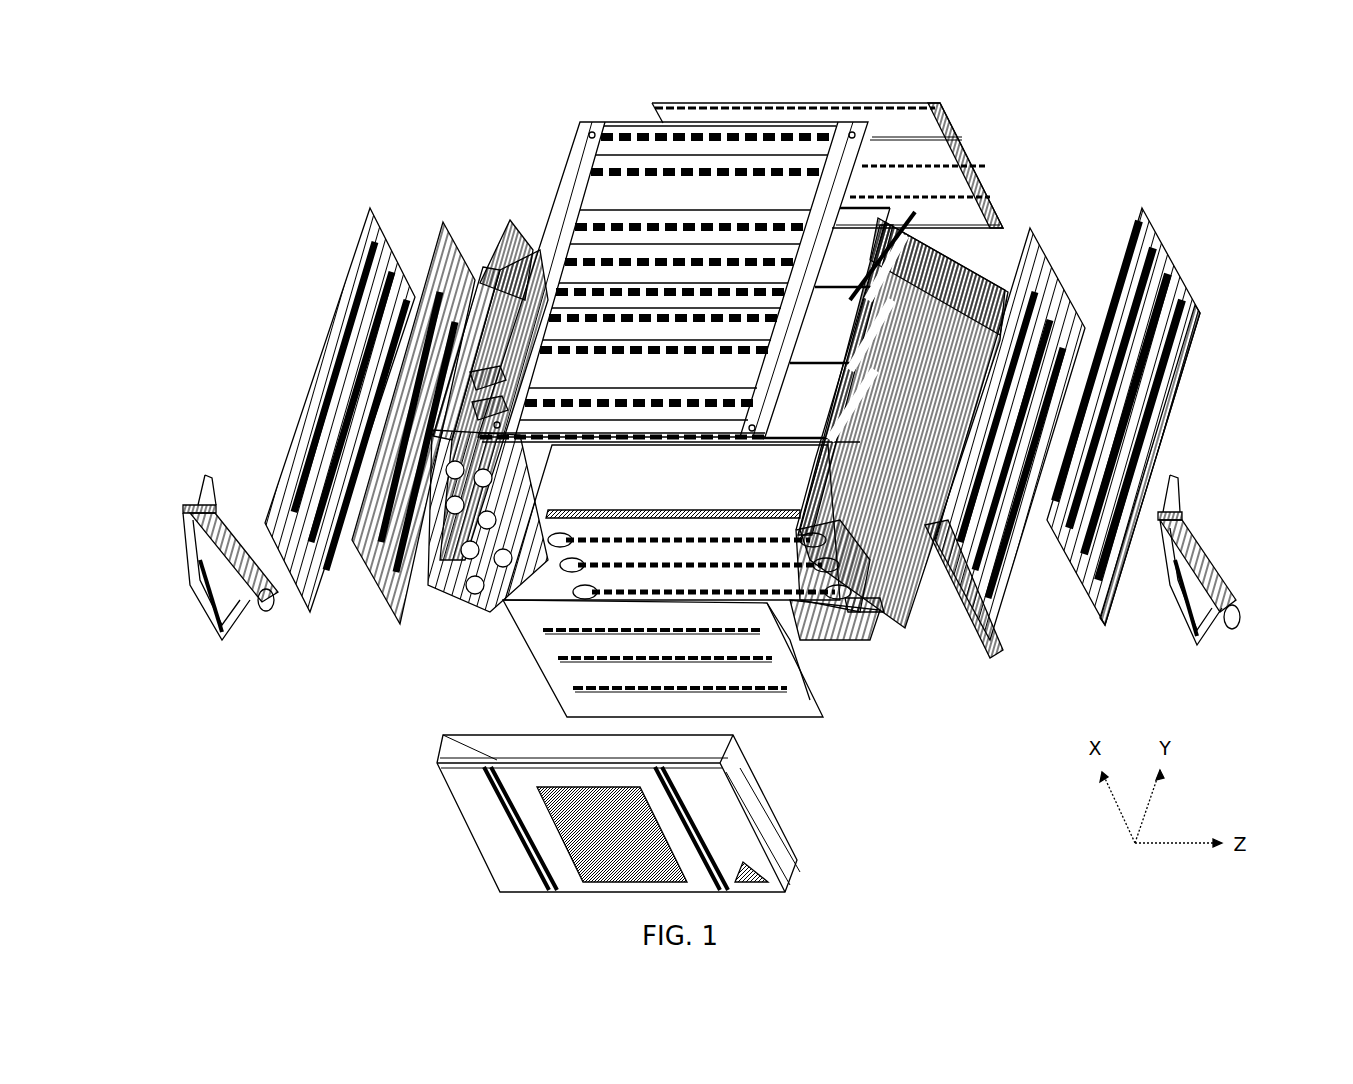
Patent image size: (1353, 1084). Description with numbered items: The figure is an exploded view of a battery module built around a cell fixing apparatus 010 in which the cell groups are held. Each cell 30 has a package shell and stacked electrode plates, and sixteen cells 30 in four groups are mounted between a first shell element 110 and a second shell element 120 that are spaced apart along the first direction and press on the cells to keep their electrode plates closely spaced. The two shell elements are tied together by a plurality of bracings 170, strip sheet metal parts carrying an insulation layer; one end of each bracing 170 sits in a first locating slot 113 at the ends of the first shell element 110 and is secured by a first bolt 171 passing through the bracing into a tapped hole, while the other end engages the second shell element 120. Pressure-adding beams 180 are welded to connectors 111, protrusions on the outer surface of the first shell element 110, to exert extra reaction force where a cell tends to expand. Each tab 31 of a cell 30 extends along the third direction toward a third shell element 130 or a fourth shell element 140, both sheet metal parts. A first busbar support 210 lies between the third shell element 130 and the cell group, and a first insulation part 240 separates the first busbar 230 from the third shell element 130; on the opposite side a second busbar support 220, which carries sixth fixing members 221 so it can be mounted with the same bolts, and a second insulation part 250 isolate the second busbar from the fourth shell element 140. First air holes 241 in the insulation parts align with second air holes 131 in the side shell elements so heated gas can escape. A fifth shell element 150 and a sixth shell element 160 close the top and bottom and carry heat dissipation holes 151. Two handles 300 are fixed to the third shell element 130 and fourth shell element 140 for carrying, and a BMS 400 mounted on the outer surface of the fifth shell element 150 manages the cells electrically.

The cell fixing apparatus 010 is at (1034, 162).
The first shell element 110 is at (662, 248).
The connector 111 is at (588, 188).
The first locating slot 113 is at (832, 135).
The pressure-adding beam 180 is at (722, 160).
The sixth shell element 160 is at (875, 112).
The first bolt 171 is at (905, 225).
The first busbar 230 is at (965, 235).
The first busbar support 210 is at (990, 265).
The first insulation part 240 is at (1023, 418).
The first air hole 241 is at (1045, 290).
The third shell element 130 is at (1156, 416).
The second air hole 131 is at (1195, 303).
The sixth fixing member 221 is at (485, 270).
The bracing 170 is at (475, 410).
The handle 300 is at (205, 556).
The fourth shell element 140 is at (305, 608).
The second insulation part 250 is at (398, 597).
The second busbar support 220 is at (470, 605).
The cell 30 is at (540, 560).
The tab 31 is at (866, 606).
The second shell element 120 is at (830, 628).
The fifth shell element 150 is at (815, 690).
The heat dissipation hole 151 is at (498, 760).
The BMS 400 is at (645, 800).